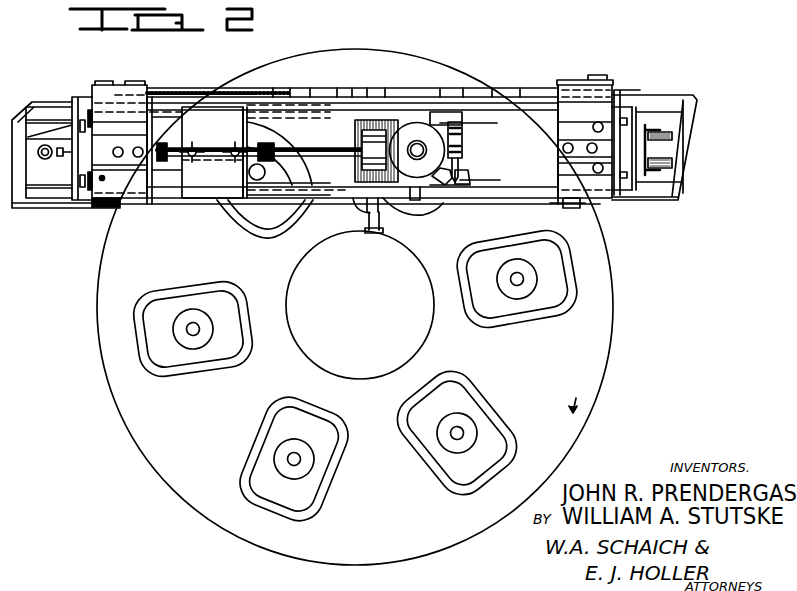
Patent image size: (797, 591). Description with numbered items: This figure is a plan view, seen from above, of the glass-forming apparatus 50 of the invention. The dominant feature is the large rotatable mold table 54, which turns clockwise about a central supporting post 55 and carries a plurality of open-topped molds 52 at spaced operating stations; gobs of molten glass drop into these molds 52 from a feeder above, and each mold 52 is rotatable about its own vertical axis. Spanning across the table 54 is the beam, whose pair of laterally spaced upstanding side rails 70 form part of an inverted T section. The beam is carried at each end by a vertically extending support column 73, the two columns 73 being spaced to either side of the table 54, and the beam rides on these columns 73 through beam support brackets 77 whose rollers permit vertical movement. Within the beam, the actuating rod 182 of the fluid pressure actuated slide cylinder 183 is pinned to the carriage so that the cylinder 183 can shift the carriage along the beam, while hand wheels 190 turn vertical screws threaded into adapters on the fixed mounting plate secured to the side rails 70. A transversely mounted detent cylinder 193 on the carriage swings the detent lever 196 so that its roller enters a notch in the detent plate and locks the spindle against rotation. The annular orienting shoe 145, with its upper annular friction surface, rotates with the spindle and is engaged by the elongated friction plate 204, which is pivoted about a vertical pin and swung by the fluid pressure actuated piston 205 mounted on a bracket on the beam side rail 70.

The apparatus 50 is at (568, 57).
The open-topped mold 52 is at (577, 258).
The rotatable mold table 54 is at (590, 372).
The central supporting post 55 is at (371, 308).
The side rail 70 is at (518, 190).
The support column 73 is at (60, 210).
The beam support bracket 77 is at (102, 178).
The annular orienting shoe 145 is at (405, 126).
The actuating rod 182 is at (331, 143).
The slide cylinder 183 is at (236, 143).
The hand wheel 190 is at (238, 153).
The detent cylinder 193 is at (462, 150).
The detent lever 196 is at (463, 183).
The friction plate 204 is at (358, 183).
The fluid pressure actuated piston 205 is at (386, 229).